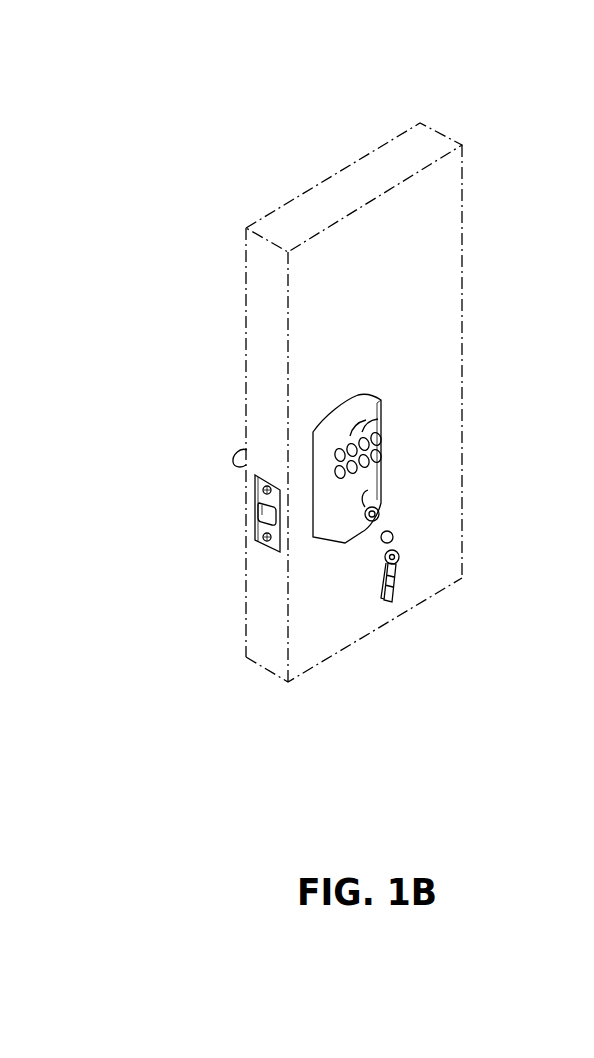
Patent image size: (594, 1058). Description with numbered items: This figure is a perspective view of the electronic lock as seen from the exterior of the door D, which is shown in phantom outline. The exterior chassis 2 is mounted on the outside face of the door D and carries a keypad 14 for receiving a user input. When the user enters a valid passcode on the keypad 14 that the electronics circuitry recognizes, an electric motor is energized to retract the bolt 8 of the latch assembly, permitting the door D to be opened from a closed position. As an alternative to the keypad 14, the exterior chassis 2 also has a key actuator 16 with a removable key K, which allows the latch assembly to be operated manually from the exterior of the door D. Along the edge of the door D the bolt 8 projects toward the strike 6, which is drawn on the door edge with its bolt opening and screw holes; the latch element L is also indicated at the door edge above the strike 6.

The door D is at (315, 212).
The exterior chassis 2 is at (416, 331).
The keypad 14 is at (408, 442).
The key actuator 16 is at (425, 505).
The key K is at (395, 523).
The latch bolt L is at (208, 425).
The bolt 8 is at (258, 508).
The strike 6 is at (257, 537).